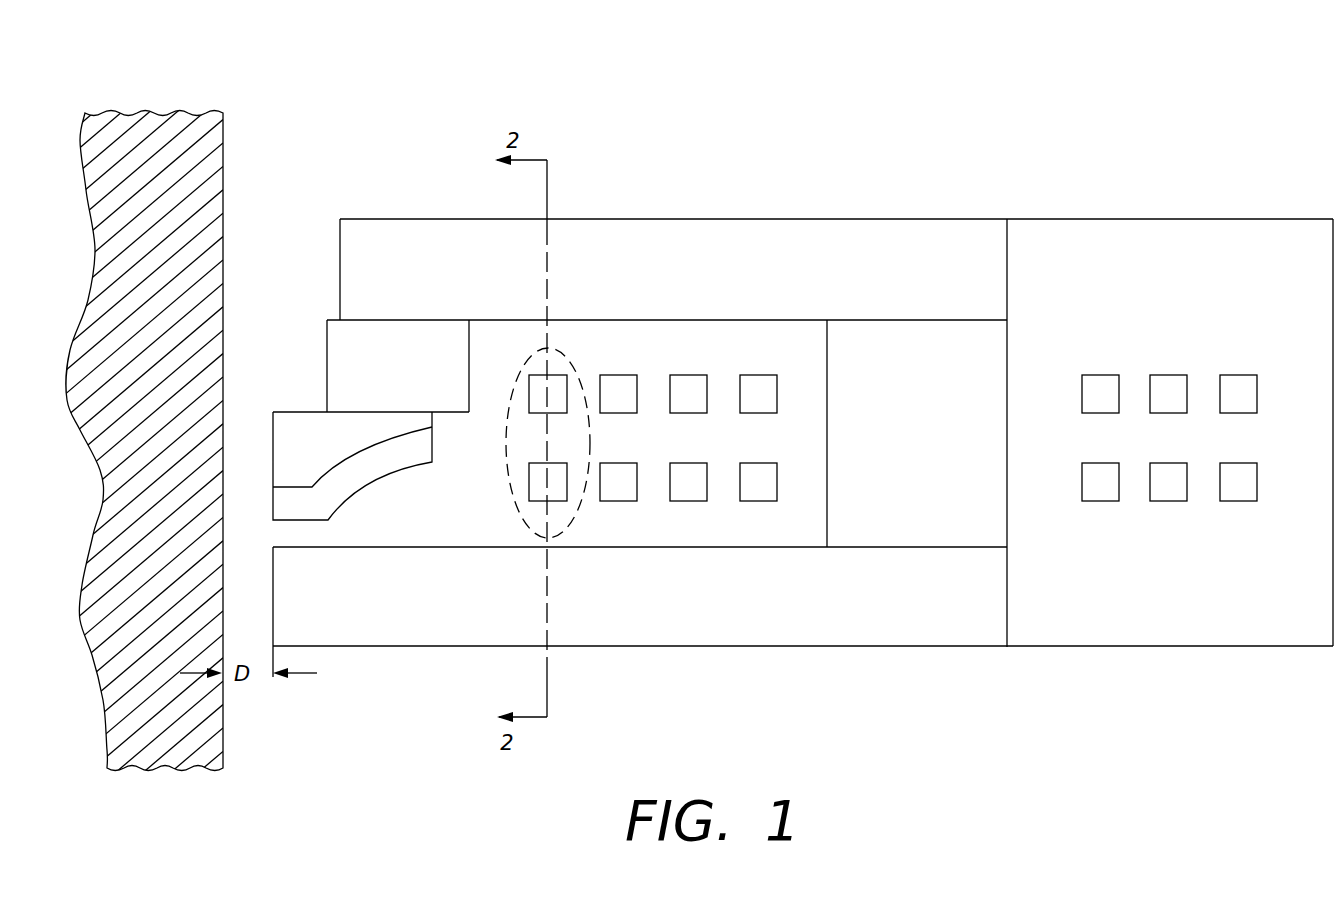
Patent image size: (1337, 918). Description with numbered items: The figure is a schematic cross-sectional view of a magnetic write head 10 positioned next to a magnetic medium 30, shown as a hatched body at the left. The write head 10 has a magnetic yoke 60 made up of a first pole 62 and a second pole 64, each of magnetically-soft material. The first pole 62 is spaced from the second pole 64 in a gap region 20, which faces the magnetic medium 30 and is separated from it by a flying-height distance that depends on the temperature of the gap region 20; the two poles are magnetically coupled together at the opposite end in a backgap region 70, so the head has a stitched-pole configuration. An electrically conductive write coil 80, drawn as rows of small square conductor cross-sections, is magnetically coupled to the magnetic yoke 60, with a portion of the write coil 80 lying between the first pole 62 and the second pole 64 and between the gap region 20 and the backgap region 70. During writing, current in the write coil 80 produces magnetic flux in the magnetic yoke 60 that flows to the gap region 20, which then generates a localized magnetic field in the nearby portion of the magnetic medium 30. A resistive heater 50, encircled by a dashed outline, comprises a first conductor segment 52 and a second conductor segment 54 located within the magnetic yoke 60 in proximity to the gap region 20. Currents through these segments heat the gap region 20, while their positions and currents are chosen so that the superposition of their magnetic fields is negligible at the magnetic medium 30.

The magnetic write head 10 is at (1013, 113).
The gap region 20 is at (433, 559).
The magnetic medium 30 is at (170, 722).
The resistive heater 50 is at (563, 350).
The first conductor segment 52 is at (530, 390).
The second conductor segment 54 is at (530, 480).
The magnetic yoke 60 is at (887, 219).
The first pole 62 is at (258, 522).
The second pole 64 is at (495, 608).
The backgap region 70 is at (1008, 657).
The write coil 80 is at (587, 373).